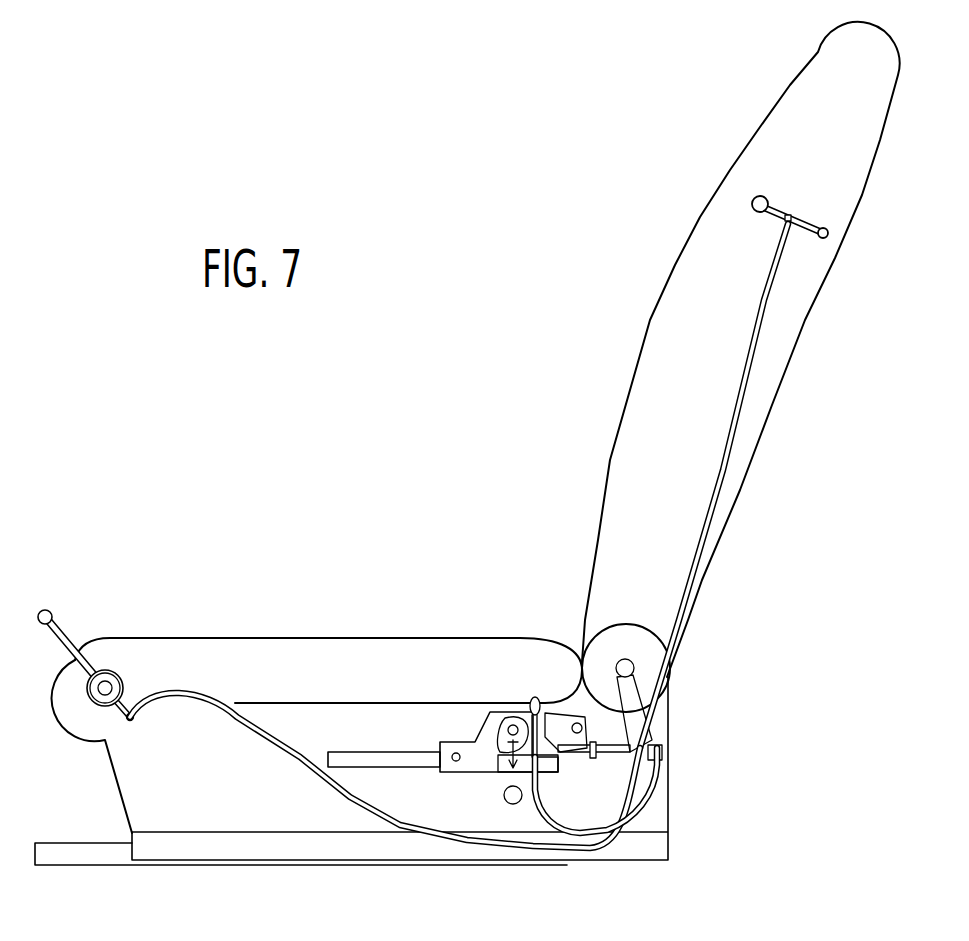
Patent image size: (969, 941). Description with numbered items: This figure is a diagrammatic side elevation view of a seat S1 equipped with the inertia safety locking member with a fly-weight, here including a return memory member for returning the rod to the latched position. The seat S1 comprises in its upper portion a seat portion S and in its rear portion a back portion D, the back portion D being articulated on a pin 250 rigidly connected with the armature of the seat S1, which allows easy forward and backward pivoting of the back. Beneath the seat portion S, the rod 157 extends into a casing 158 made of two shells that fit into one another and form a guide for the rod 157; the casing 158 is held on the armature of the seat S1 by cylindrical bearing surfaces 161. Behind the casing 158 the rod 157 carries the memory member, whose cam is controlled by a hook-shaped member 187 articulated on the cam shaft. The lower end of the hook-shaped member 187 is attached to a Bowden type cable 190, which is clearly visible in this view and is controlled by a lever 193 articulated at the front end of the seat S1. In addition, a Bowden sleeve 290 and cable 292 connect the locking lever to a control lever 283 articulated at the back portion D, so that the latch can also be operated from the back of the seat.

The back portion D is at (790, 140).
The seat portion S is at (313, 663).
The seat S1 is at (224, 791).
The rod 157 is at (405, 758).
The casing 158 is at (497, 727).
The cylindrical bearing surfaces 161 is at (455, 750).
The hook-shaped member 187 is at (563, 717).
The cable 190 is at (575, 762).
The lever 193 is at (62, 638).
The pin 250 is at (632, 667).
The control lever 283 is at (773, 218).
The Bowden sleeve 290 is at (723, 470).
The cable 292 is at (804, 208).